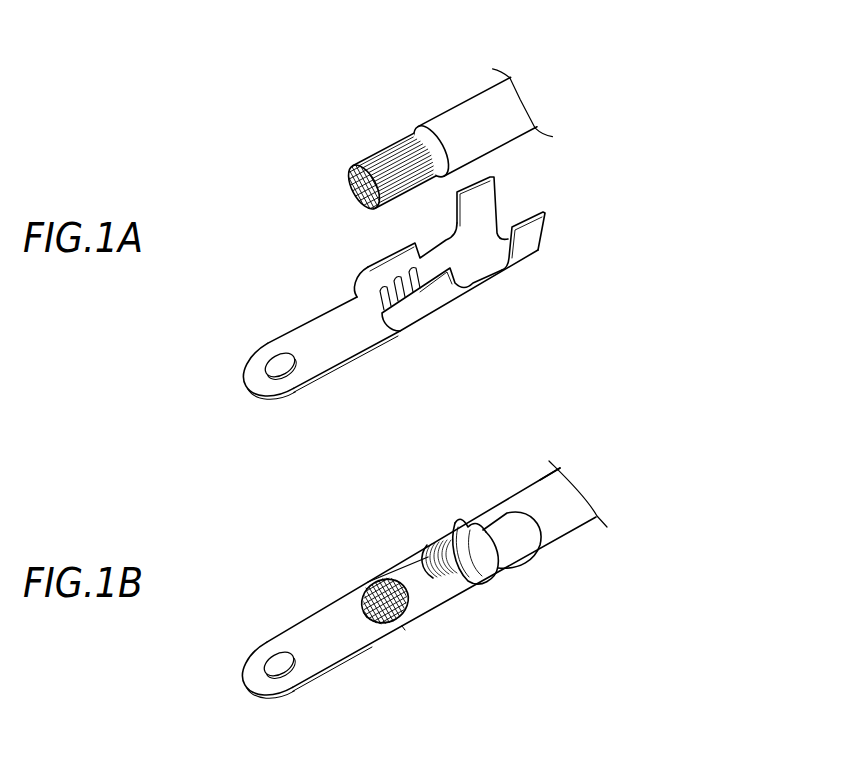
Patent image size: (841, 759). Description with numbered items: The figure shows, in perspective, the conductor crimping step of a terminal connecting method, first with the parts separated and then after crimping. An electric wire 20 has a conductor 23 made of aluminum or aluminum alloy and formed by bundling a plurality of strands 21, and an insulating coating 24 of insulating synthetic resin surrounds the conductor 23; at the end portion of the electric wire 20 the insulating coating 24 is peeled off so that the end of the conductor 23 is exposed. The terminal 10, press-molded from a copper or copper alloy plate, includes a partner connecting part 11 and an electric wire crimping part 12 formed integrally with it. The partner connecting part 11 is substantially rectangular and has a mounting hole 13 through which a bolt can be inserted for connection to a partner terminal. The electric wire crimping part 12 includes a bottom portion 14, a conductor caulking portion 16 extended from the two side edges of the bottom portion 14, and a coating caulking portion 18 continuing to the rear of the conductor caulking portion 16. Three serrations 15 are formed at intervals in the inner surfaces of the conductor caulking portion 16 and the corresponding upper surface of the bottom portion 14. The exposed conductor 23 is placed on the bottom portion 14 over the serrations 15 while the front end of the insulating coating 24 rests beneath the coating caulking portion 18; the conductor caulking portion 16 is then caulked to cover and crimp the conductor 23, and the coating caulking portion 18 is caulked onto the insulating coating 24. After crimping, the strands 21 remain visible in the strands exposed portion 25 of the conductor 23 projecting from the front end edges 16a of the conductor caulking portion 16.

In FIG. 1A, the terminal 10 is at (363, 362).
In FIG. 1B, the terminal 10 is at (443, 616).
In FIG. 1A, the partner connecting part 11 is at (278, 348).
In FIG. 1B, the partner connecting part 11 is at (292, 640).
In FIG. 1A, the electric wire crimping part 12 is at (617, 287).
In FIG. 1B, the electric wire crimping part 12 is at (497, 412).
In FIG. 1A, the mounting hole 13 is at (288, 376).
In FIG. 1B, the mounting hole 13 is at (284, 673).
In FIG. 1A, the bottom portion 14 is at (471, 271).
In FIG. 1A, the serrations 15 is at (383, 298).
In FIG. 1A, the conductor caulking portion 16 is at (423, 297).
In FIG. 1B, the conductor caulking portion 16 is at (417, 565).
In FIG. 1B, the front end edges 16a is at (363, 592).
In FIG. 1A, the coating caulking portion 18 is at (483, 205).
In FIG. 1B, the coating caulking portion 18 is at (511, 508).
In FIG. 1A, the electric wire 20 is at (460, 103).
In FIG. 1B, the electric wire 20 is at (534, 476).
In FIG. 1A, the strands 21 is at (355, 180).
In FIG. 1B, the strands 21 is at (374, 623).
In FIG. 1A, the conductor 23 is at (381, 148).
In FIG. 1B, the conductor 23 is at (448, 547).
In FIG. 1A, the insulating coating 24 is at (497, 129).
In FIG. 1B, the insulating coating 24 is at (558, 522).
In FIG. 1B, the strands exposed portion 25 is at (365, 616).